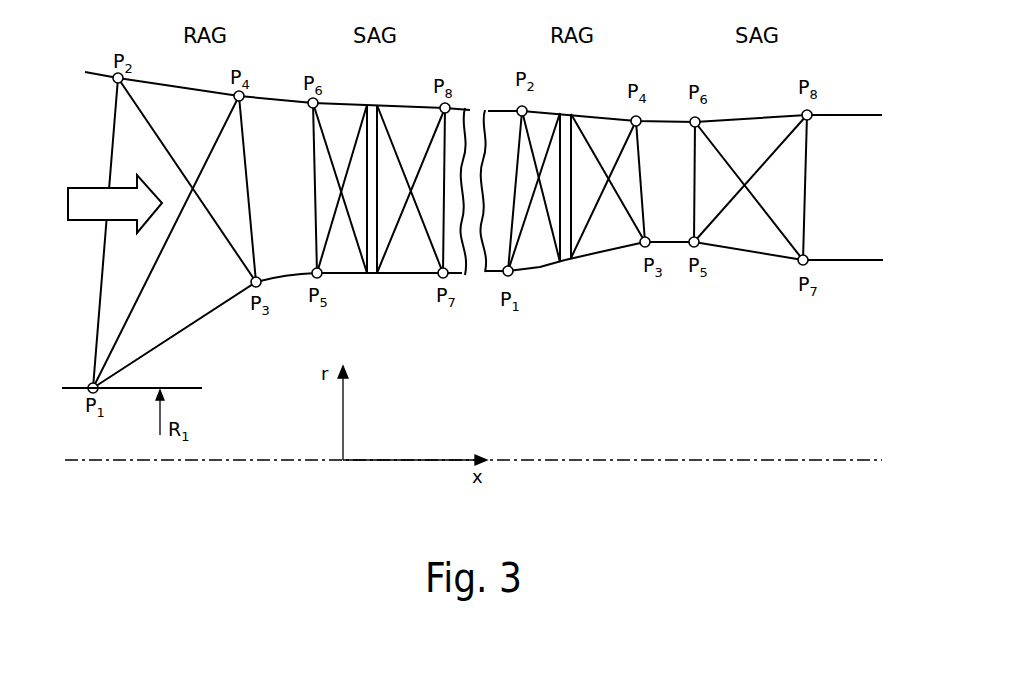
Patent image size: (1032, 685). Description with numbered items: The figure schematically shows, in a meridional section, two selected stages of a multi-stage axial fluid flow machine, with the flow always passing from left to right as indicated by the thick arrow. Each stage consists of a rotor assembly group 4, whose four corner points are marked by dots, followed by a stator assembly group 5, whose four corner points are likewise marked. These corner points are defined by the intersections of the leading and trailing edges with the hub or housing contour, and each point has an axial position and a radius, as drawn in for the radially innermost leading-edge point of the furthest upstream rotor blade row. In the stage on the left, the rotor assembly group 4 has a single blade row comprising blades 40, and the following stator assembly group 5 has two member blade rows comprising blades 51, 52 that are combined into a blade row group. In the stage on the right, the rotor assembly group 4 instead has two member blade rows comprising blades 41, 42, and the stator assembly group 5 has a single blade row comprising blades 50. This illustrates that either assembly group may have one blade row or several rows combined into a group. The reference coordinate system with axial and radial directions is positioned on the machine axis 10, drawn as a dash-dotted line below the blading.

The rotor assembly group 4 is at (116, 118).
The stator assembly group 5 is at (313, 172).
The machine axis 10 is at (757, 460).
The blades 40 is at (209, 309).
The blades 41 is at (532, 260).
The blades 42 is at (605, 242).
The blades 50 is at (743, 242).
The blades 51 is at (343, 263).
The blades 52 is at (407, 263).